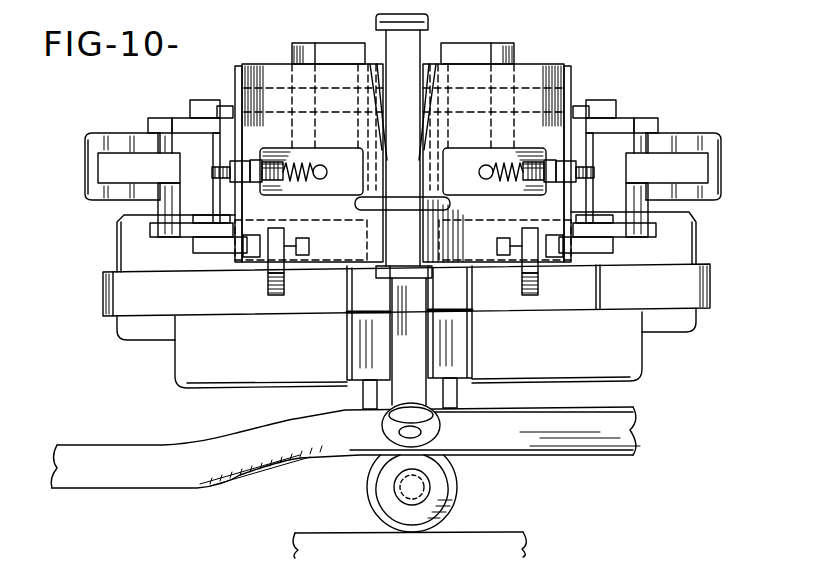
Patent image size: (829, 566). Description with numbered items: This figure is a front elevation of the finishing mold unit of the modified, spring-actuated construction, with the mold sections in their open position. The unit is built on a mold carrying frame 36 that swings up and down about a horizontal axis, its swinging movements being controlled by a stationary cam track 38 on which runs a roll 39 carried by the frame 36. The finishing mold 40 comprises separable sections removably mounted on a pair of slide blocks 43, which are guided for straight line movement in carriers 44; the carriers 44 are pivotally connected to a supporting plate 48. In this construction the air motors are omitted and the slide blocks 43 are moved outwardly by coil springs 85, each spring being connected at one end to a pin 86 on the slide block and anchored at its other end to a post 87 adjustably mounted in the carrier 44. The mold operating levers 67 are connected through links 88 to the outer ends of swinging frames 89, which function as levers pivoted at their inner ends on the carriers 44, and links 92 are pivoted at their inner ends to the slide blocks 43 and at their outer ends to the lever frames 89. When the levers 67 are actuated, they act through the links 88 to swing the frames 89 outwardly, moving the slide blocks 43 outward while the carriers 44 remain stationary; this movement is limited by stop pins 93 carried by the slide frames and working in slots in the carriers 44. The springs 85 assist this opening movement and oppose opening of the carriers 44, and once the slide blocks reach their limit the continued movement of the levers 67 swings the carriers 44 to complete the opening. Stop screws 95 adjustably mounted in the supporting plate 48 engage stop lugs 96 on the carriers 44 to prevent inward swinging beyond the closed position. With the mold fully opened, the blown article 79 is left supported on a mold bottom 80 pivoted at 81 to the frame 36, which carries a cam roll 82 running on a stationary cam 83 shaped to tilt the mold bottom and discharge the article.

The mold carrying frame 36 is at (637, 352).
The stationary cam track 38 is at (350, 513).
The roll 39 is at (457, 492).
The finishing mold 40 is at (316, 43).
The slide blocks 43 is at (237, 93).
The carriers 44 is at (258, 65).
The supporting plate 48 is at (128, 277).
The mold operating levers 67 is at (87, 165).
The blown article 79 is at (420, 42).
The mold bottom 80 is at (412, 232).
The pivot 81 is at (366, 374).
The cam roll 82 is at (384, 422).
The stationary cam 83 is at (279, 463).
The coil springs 85 is at (296, 160).
The pin 86 is at (328, 170).
The post 87 is at (222, 168).
The links 88 is at (140, 160).
The swinging frames 89 is at (186, 119).
The links 92 is at (216, 105).
The stop pins 93 is at (298, 58).
The stop screws 95 is at (300, 244).
The stop lugs 96 is at (252, 235).